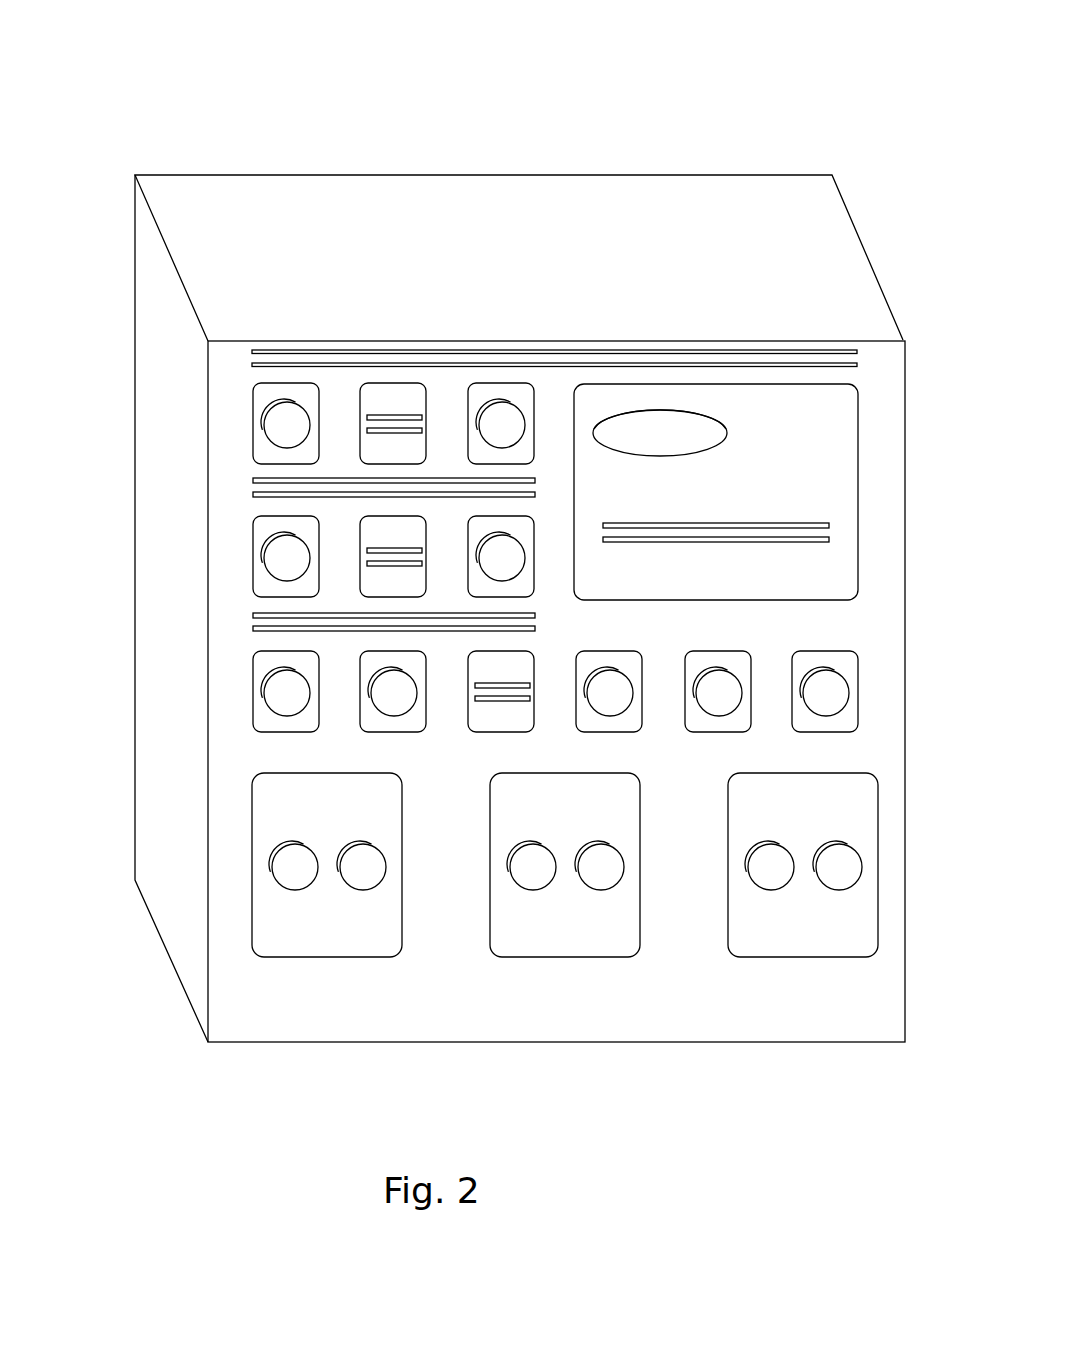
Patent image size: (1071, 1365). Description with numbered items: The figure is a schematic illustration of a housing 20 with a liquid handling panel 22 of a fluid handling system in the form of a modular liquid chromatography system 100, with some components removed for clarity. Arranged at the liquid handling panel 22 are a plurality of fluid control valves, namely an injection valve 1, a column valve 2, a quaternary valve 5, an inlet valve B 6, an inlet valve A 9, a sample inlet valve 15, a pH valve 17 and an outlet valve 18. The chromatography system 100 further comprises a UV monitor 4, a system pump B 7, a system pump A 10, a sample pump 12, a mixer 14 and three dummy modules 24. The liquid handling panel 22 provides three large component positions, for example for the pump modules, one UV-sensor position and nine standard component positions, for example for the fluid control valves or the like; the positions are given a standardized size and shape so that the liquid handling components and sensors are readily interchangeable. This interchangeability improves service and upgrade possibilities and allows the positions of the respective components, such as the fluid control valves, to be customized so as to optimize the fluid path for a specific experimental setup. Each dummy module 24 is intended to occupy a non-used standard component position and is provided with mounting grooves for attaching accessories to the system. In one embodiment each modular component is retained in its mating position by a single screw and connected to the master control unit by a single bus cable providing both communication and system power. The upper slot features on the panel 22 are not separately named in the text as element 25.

The modular liquid chromatography system 100 is at (501, 575).
The housing 20 is at (501, 592).
The liquid handling panel 22 is at (501, 592).
The ventilation slots 25 is at (529, 353).
The injection valve 1 is at (273, 403).
The column valve 2 is at (490, 398).
The UV monitor 4 is at (647, 420).
The quaternary valve 5 is at (723, 682).
The inlet valve B 6 is at (853, 707).
The system pump B 7 is at (825, 957).
The inlet valve A 9 is at (622, 727).
The system pump A 10 is at (568, 957).
The sample pump 12 is at (323, 962).
The mixer 14 is at (373, 730).
The sample inlet valve 15 is at (242, 710).
The pH valve 17 is at (468, 578).
The outlet valve 18 is at (247, 557).
The dummy module 24 is at (383, 400).